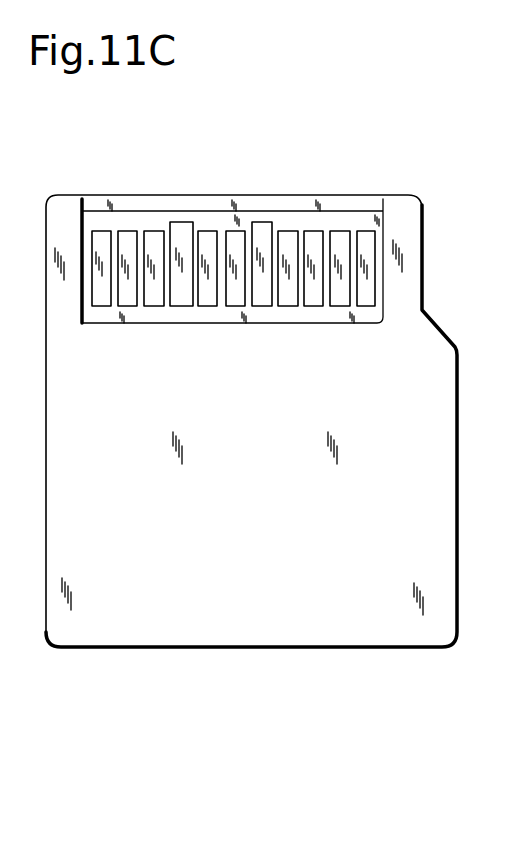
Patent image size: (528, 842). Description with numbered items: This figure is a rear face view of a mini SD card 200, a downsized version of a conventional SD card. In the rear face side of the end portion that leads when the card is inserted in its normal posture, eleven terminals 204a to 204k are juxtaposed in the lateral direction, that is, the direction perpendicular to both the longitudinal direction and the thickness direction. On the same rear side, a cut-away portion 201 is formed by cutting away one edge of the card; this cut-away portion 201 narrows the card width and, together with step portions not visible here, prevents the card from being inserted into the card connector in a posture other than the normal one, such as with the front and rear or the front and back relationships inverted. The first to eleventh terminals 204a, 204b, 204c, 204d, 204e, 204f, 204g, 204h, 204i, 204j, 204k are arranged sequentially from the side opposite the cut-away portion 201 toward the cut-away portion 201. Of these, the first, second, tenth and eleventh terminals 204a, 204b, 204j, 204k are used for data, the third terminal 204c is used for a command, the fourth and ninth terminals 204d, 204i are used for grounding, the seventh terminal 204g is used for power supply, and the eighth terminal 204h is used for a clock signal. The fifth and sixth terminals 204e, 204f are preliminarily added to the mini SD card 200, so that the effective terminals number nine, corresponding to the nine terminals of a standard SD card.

The mini SD card 200 is at (285, 515).
The cut-away portion 201 is at (427, 280).
The first terminal 204a is at (101, 240).
The second terminal 204b is at (127, 298).
The third terminal 204c is at (155, 240).
The fourth terminal 204d is at (181, 297).
The fifth terminal 204e is at (208, 240).
The sixth terminal 204f is at (237, 298).
The seventh terminal 204g is at (262, 234).
The eighth terminal 204h is at (289, 298).
The ninth terminal 204i is at (313, 240).
The tenth terminal 204j is at (340, 298).
The eleventh terminal 204k is at (365, 240).